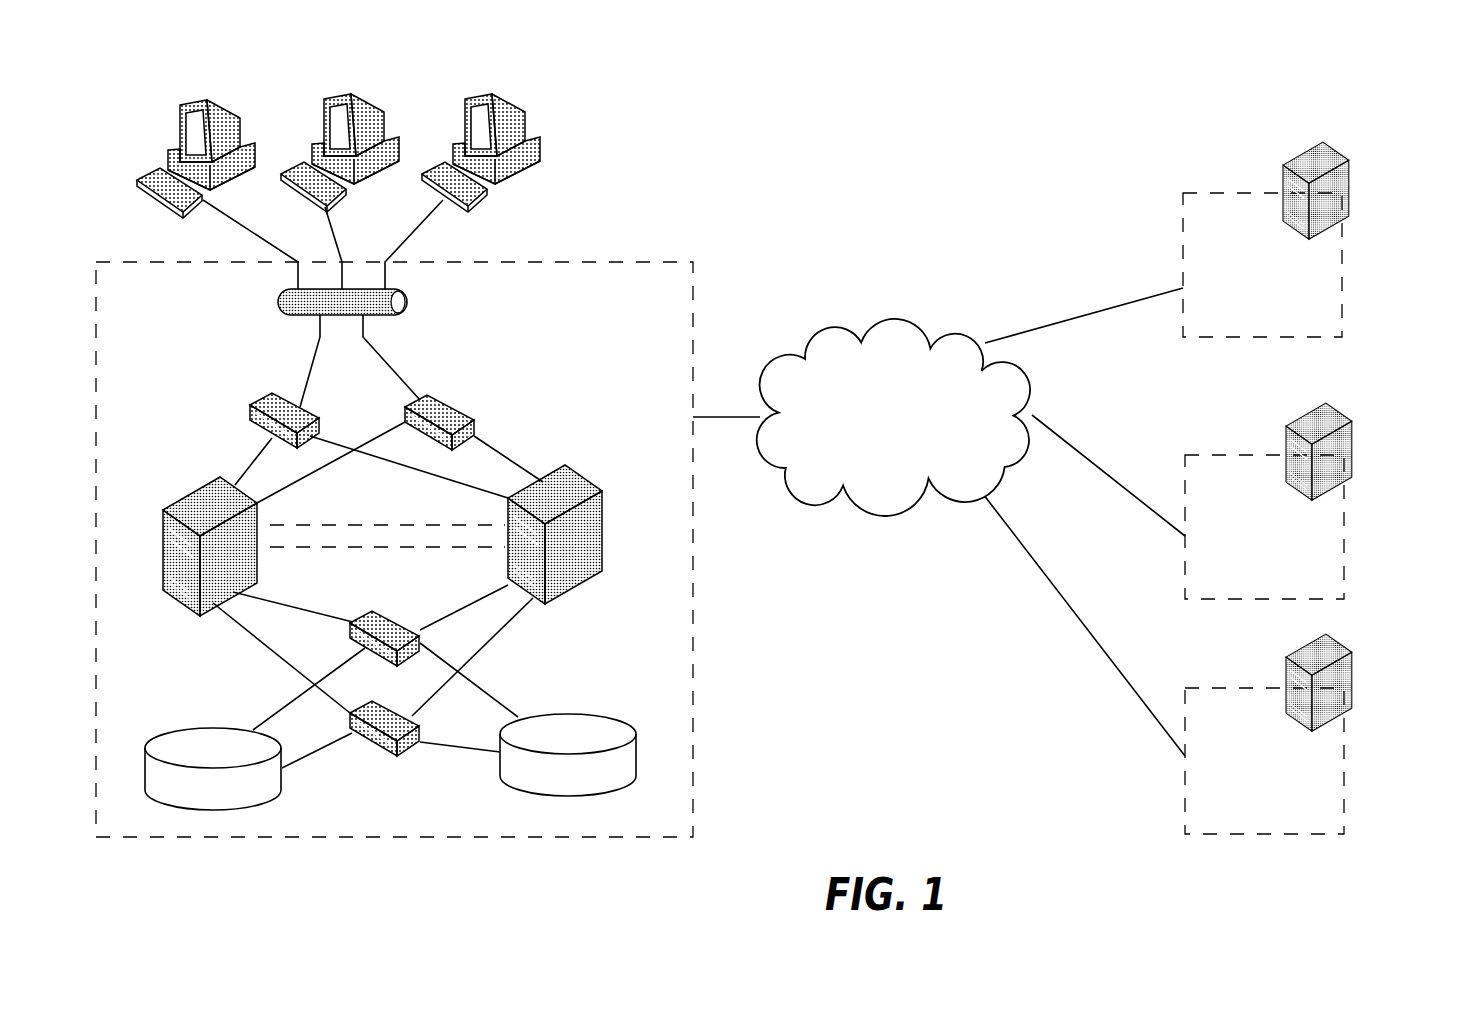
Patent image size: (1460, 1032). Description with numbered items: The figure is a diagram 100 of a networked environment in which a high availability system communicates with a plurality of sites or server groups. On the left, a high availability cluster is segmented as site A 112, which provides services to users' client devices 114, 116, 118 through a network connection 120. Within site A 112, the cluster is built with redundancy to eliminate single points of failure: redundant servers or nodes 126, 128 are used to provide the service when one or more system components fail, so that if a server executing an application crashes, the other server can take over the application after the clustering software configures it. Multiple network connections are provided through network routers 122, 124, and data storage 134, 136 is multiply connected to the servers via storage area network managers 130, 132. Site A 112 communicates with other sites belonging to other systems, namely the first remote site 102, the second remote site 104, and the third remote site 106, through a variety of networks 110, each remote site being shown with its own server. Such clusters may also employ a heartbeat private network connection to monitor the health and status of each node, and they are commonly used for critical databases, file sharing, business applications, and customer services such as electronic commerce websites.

The diagram 100 is at (1295, 98).
The site 1 102 is at (1215, 177).
The site 2 104 is at (1239, 437).
The site 3 106 is at (1244, 672).
The networks 110 is at (898, 305).
The site A 112 is at (557, 243).
The client device 114 is at (215, 85).
The client device 116 is at (358, 80).
The client device 118 is at (500, 80).
The network connection 120 is at (270, 298).
The network router 122 is at (258, 390).
The network router 124 is at (460, 395).
The redundant server 126 is at (212, 470).
The redundant server 128 is at (568, 455).
The storage area network manager 130 is at (375, 600).
The storage area network manager 132 is at (390, 772).
The data storage 134 is at (215, 710).
The data storage 136 is at (575, 698).